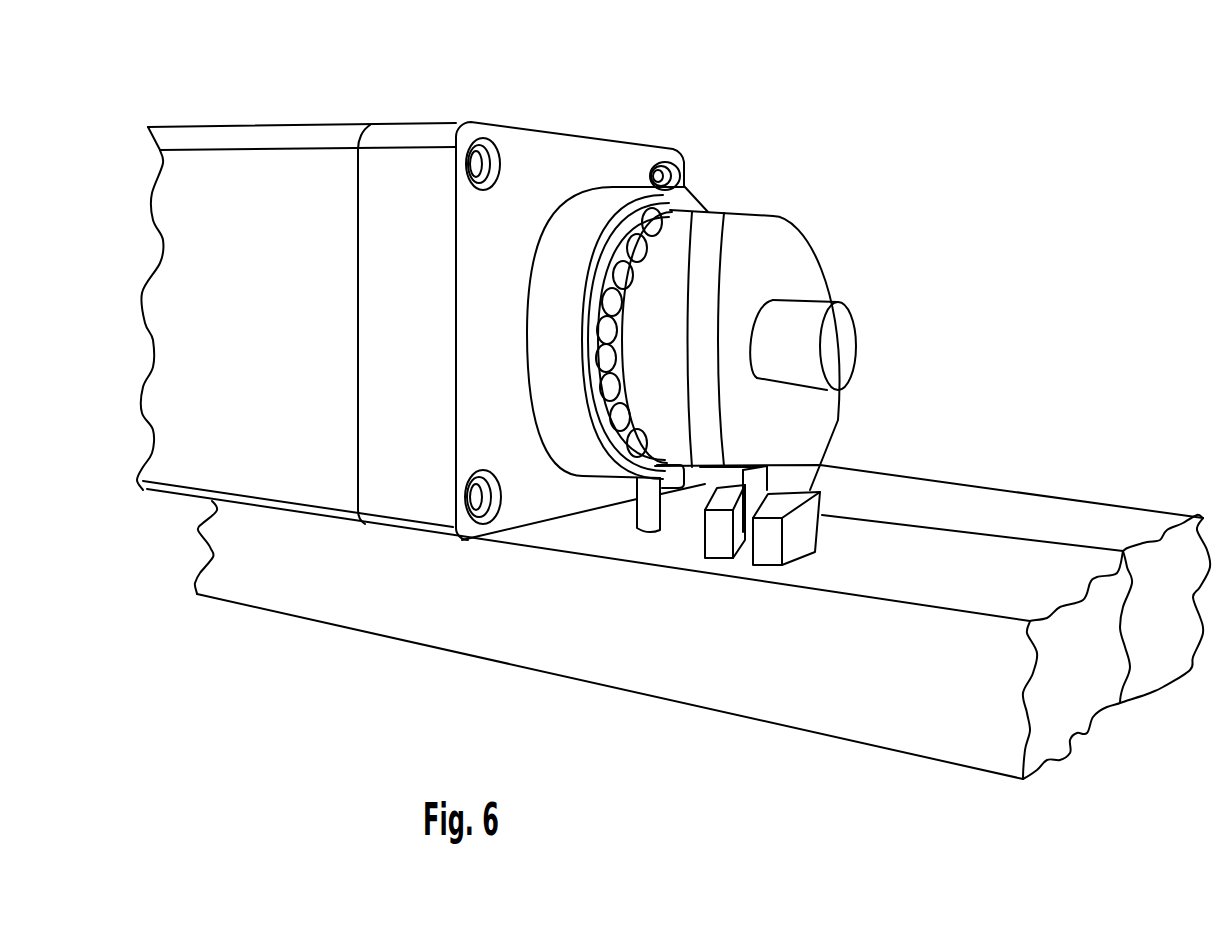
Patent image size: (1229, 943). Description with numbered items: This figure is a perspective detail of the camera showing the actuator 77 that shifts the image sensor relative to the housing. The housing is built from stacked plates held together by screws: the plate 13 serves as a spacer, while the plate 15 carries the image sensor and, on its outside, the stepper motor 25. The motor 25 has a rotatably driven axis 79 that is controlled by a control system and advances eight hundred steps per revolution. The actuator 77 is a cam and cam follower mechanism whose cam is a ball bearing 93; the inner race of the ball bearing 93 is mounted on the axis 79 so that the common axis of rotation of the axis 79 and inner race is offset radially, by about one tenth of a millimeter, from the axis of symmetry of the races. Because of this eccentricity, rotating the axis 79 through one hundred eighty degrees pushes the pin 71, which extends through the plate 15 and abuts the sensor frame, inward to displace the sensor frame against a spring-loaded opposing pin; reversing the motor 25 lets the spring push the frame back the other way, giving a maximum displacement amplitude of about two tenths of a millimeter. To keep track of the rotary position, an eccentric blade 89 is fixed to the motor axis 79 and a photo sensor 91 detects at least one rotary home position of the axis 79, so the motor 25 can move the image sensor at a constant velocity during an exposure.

The plate 13 is at (1160, 688).
The plate 15 is at (1087, 733).
The motor 25 is at (598, 118).
The pin 71 is at (667, 513).
The actuator 77 is at (868, 116).
The axis 79 is at (828, 302).
The eccentric blade 89 is at (838, 427).
The photo sensor 91 is at (823, 500).
The ball bearing 93 is at (680, 181).